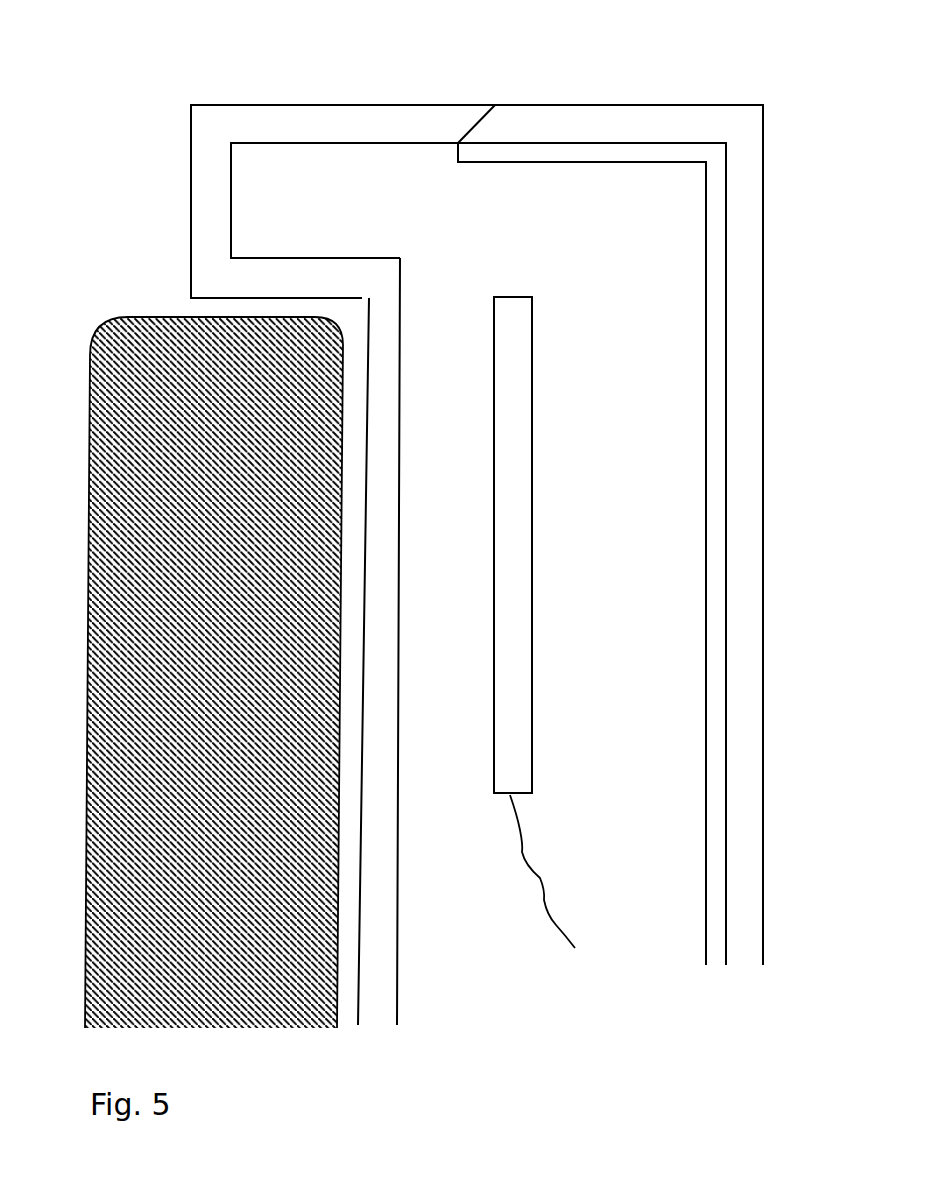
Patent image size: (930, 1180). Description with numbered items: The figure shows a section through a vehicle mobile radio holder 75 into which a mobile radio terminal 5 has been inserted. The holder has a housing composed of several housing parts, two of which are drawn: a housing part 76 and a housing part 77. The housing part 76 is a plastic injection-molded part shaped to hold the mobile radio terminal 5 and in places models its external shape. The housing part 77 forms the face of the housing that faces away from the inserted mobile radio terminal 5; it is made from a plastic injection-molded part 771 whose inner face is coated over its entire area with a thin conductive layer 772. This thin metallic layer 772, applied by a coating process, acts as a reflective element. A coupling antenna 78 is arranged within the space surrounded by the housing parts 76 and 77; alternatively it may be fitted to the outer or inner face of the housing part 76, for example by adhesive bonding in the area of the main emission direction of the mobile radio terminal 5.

The mobile radio terminal 5 is at (100, 680).
The vehicle mobile radio holder 75 is at (455, 101).
The housing part 76 is at (203, 187).
The housing part 77 is at (772, 214).
The plastic injection-molded part 771 is at (754, 150).
The thin conductive layer 772 is at (712, 208).
The coupling antenna 78 is at (522, 512).